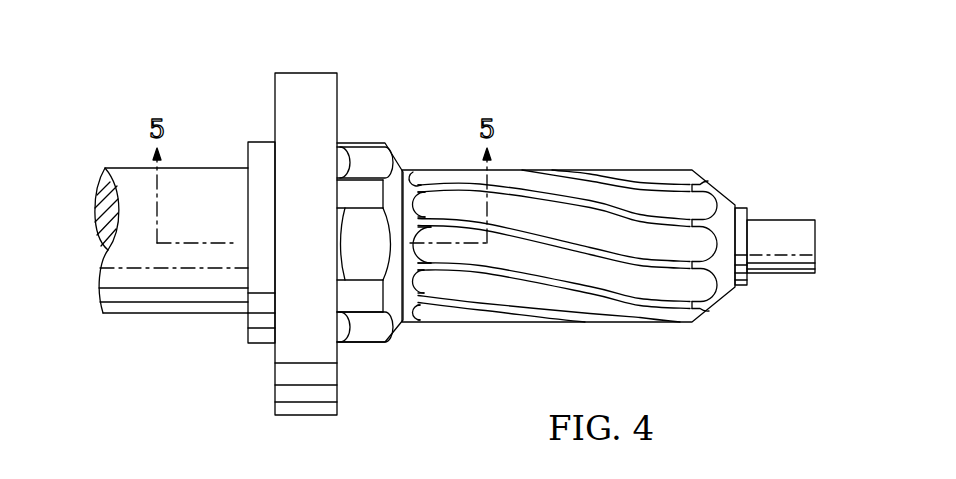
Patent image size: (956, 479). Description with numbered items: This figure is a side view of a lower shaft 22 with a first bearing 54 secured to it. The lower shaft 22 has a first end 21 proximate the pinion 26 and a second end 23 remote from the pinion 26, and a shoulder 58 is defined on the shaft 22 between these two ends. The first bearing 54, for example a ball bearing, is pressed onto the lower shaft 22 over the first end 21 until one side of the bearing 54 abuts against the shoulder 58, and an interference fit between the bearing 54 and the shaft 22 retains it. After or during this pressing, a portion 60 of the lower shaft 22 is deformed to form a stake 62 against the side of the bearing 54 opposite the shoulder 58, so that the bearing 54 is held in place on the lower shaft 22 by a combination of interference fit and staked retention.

The first end 21 is at (818, 236).
The lower shaft 22 is at (118, 167).
The second end 23 is at (100, 310).
The pinion 26 is at (580, 170).
The first bearing 54 is at (292, 74).
The shoulder 58 is at (243, 338).
The portion 60 is at (380, 235).
The stake 62 is at (347, 164).